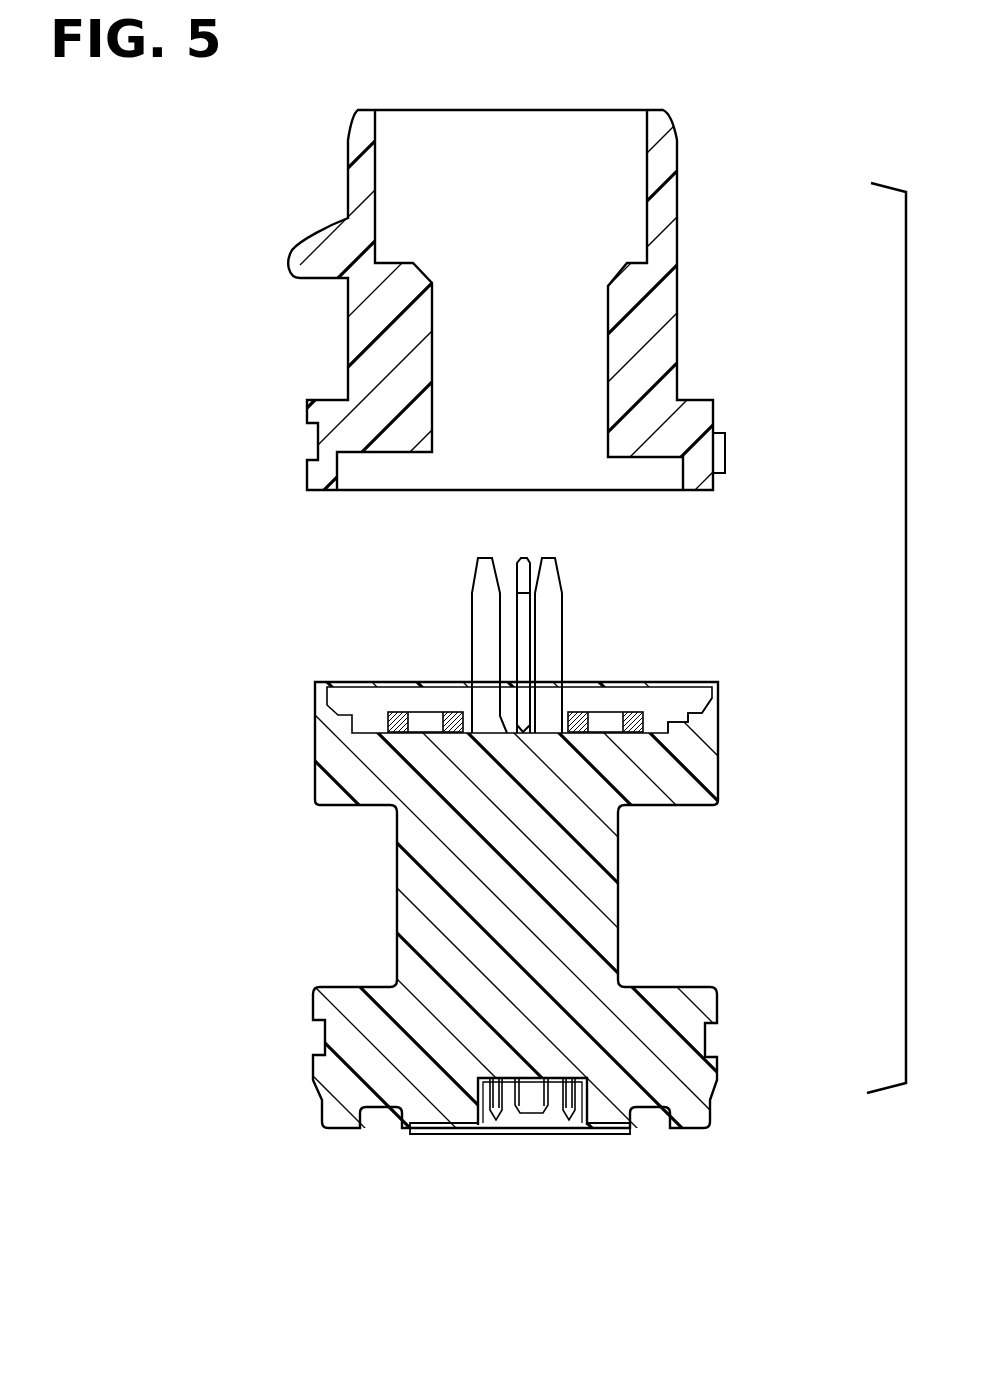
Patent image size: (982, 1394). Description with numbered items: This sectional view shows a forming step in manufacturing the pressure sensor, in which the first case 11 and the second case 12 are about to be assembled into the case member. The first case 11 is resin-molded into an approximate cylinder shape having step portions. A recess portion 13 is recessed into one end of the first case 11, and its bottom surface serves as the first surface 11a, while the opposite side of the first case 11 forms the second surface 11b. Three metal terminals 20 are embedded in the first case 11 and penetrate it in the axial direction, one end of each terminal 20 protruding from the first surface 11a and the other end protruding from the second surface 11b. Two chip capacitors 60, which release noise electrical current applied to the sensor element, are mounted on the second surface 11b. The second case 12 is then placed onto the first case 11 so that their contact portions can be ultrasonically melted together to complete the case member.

The first case 11 is at (315, 750).
The first surface 11a is at (555, 1077).
The second surface 11b is at (673, 728).
The second case 12 is at (347, 352).
The recess portion 13 is at (480, 1125).
The terminals 20 is at (485, 578).
The chip capacitor 60 is at (425, 718).